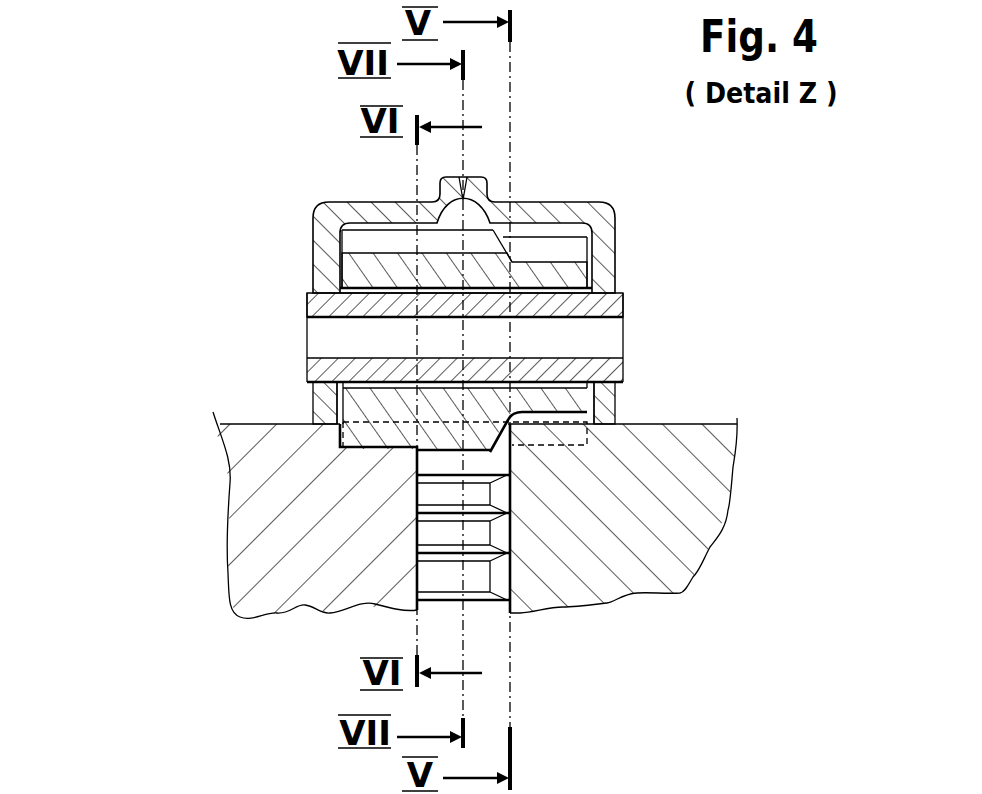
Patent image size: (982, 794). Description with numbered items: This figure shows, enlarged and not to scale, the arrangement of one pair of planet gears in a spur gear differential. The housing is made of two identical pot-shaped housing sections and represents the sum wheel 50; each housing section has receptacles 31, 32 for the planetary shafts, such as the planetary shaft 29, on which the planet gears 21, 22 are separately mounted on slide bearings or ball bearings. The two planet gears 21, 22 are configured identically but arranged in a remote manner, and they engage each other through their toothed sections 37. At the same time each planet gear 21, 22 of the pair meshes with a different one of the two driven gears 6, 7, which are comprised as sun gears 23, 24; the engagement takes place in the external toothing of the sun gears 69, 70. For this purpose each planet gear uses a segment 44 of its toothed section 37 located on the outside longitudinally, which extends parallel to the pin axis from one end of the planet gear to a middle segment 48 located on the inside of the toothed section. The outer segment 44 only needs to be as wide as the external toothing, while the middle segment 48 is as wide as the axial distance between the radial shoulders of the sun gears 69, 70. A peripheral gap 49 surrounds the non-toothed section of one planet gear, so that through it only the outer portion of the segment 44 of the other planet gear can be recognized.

The outer segment of toothed section 44 is at (358, 237).
The middle segment of toothed section 48 is at (468, 238).
The peripheral gap 49 is at (548, 247).
The planet gear 21 is at (353, 268).
The planet gear 22 is at (577, 253).
The receptacle 31 is at (310, 305).
The receptacle 32 is at (623, 300).
The planetary shaft 29 is at (323, 367).
The sum wheel 50 is at (605, 403).
The sun gear 23 is at (271, 515).
The driven gear 6 is at (245, 543).
The driven gear 7 is at (664, 515).
The sun gear 24 is at (710, 522).
The sun gear 69 is at (393, 452).
The sun gear 70 is at (530, 437).
The toothed section 37 is at (815, 787).